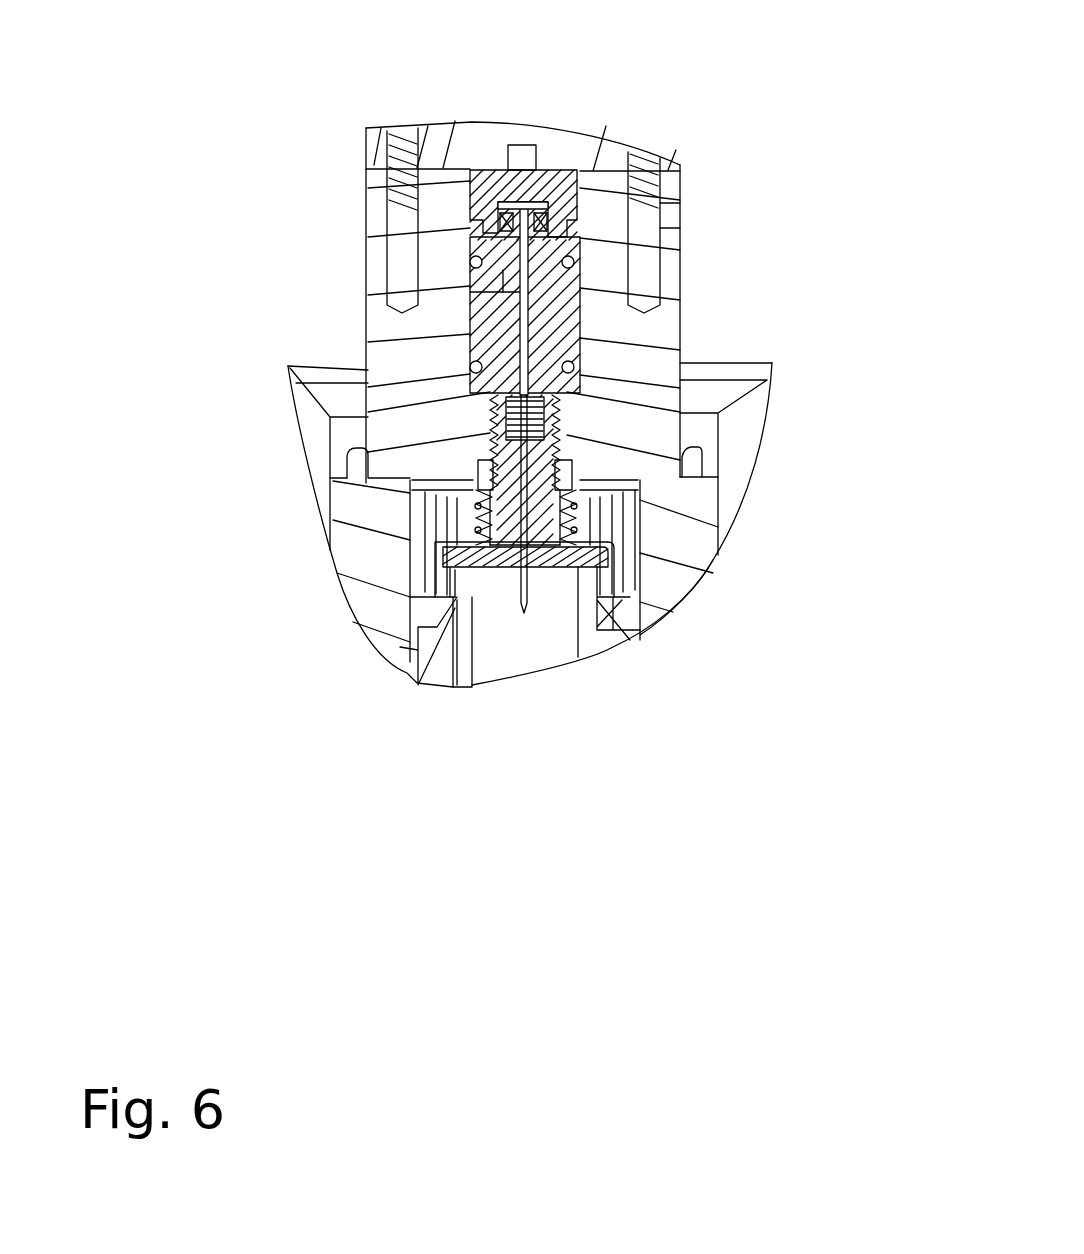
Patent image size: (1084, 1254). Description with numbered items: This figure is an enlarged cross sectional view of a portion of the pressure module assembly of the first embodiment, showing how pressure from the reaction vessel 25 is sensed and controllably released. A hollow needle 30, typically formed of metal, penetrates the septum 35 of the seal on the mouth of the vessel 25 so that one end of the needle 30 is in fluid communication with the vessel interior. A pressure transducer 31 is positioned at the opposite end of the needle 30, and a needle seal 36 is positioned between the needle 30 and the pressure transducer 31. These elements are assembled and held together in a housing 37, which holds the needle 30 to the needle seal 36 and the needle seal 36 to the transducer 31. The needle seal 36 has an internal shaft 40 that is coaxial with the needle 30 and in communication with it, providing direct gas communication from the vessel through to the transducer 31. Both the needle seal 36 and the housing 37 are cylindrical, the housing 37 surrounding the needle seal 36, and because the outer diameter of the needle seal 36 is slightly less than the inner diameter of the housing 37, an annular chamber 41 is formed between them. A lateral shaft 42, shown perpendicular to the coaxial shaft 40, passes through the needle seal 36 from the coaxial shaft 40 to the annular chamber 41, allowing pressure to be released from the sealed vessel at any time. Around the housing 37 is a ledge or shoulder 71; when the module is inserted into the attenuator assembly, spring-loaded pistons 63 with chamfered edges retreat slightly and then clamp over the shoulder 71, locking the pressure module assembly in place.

The reaction vessel 25 is at (463, 673).
The needle 30 is at (522, 598).
The pressure transducer 31 is at (562, 171).
The septum 35 is at (563, 567).
The needle seal 36 is at (583, 320).
The housing 37 is at (692, 542).
The internal shaft 40 is at (527, 345).
The annular chamber 41 is at (470, 330).
The lateral shaft 42 is at (503, 290).
The spring-loaded pistons 63 is at (695, 462).
The shoulder 71 is at (342, 480).